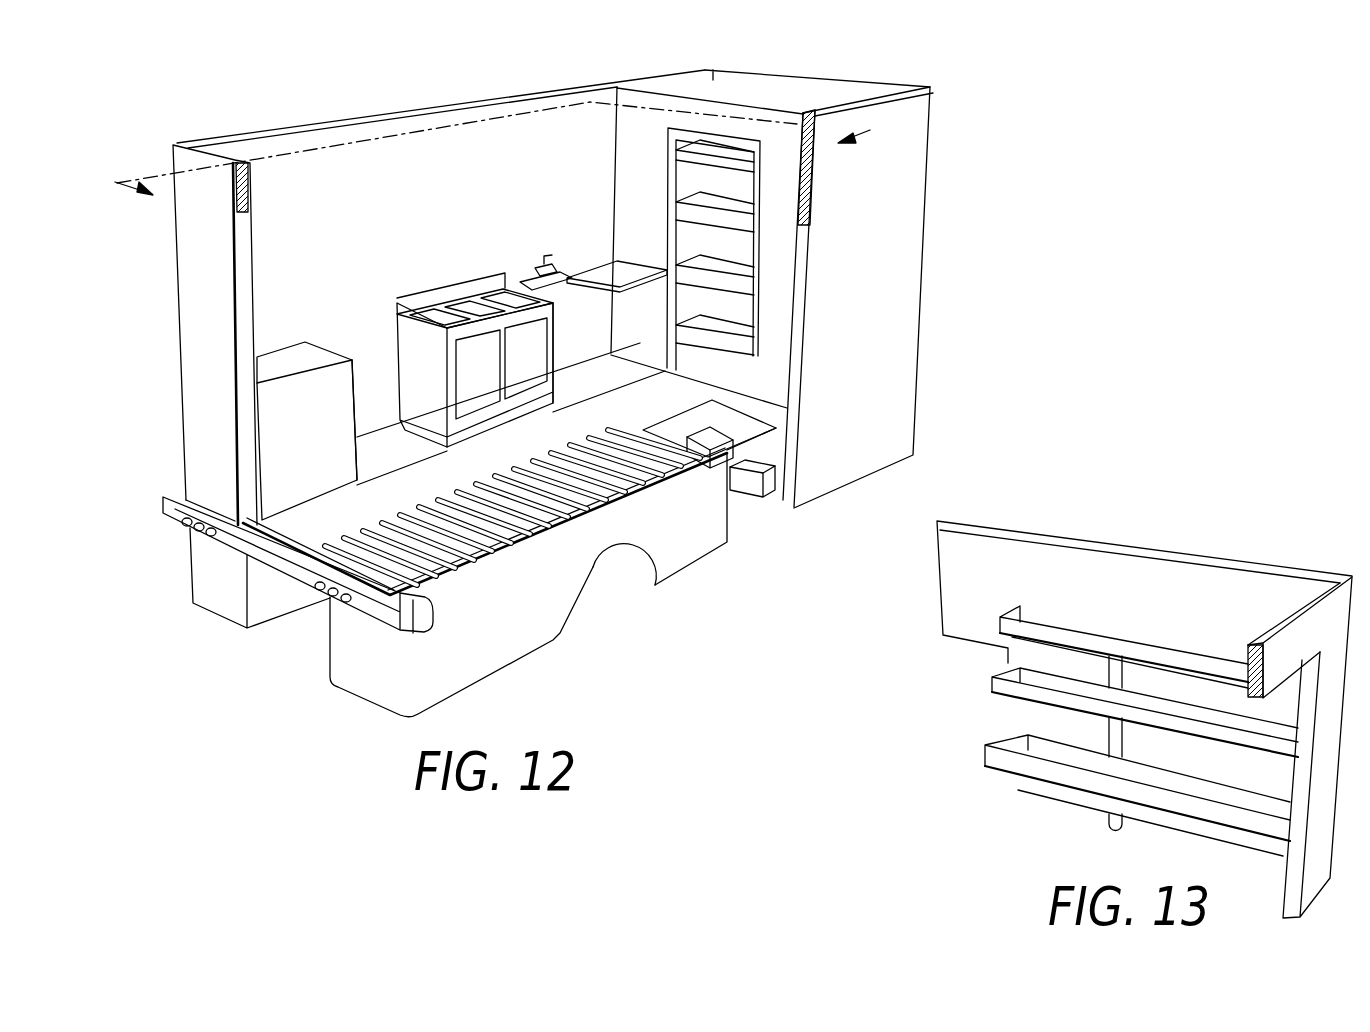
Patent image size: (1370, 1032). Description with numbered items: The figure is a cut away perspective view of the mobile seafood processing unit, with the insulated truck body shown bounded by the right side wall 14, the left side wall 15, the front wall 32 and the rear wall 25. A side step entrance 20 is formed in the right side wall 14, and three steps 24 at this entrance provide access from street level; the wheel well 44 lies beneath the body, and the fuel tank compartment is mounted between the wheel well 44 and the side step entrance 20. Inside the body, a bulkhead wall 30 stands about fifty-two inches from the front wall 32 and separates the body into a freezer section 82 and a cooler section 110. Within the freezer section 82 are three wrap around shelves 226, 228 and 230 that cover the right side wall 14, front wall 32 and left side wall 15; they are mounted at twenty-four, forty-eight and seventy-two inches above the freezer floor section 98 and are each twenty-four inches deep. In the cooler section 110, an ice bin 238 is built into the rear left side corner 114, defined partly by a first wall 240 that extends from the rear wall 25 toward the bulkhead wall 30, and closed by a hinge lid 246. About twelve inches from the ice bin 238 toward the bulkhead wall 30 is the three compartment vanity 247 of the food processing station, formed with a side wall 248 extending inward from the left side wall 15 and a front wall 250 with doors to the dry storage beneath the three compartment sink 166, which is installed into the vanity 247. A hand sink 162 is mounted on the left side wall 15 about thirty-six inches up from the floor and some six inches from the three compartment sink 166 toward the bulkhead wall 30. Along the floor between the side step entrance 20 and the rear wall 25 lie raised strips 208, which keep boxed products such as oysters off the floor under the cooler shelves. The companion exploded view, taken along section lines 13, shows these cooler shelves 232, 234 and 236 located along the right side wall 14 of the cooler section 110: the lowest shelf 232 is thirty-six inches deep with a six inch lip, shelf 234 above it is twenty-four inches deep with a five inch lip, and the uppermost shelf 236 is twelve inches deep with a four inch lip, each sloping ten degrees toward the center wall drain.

In FIG. 12, the section lines 13— 13 is at (492, 170).
In FIG. 12, the right side wall 14 is at (923, 140).
In FIG. 13, the right side wall 14 is at (1125, 616).
In FIG. 12, the left side wall 15 is at (688, 84).
In FIG. 12, the side step entrance 20 is at (750, 522).
In FIG. 12, the steps 24 is at (714, 437).
In FIG. 12, the rear wall 25 is at (220, 234).
In FIG. 13, the rear wall 25 is at (1348, 651).
In FIG. 12, the bulkhead wall 30 is at (655, 206).
In FIG. 12, the front wall 32 is at (774, 84).
In FIG. 12, the wheel well 44 is at (590, 587).
In FIG. 12, the freezer section 82 is at (728, 250).
In FIG. 12, the freezer floor section 98 is at (700, 336).
In FIG. 12, the cooler section 110 is at (357, 508).
In FIG. 12, the rear left side corner 114 is at (202, 462).
In FIG. 12, the hand sink 162 is at (543, 268).
In FIG. 12, the three compartment sink 166 is at (455, 293).
In FIG. 12, the raised strips 208 is at (628, 472).
In FIG. 12, the shelf 226 is at (728, 251).
In FIG. 12, the shelf 228 is at (704, 218).
In FIG. 12, the shelf 230 is at (691, 152).
In FIG. 13, the cooler shelf 232 is at (1037, 630).
In FIG. 13, the cooler shelf 234 is at (1140, 712).
In FIG. 13, the cooler shelf 236 is at (1183, 785).
In FIG. 12, the ice bin 238 is at (316, 465).
In FIG. 12, the first wall 240 is at (345, 442).
In FIG. 12, the hinge lid 246 is at (282, 347).
In FIG. 12, the three compartment vanity 247 is at (440, 391).
In FIG. 12, the side wall 248 is at (405, 322).
In FIG. 12, the front wall 250 is at (556, 373).